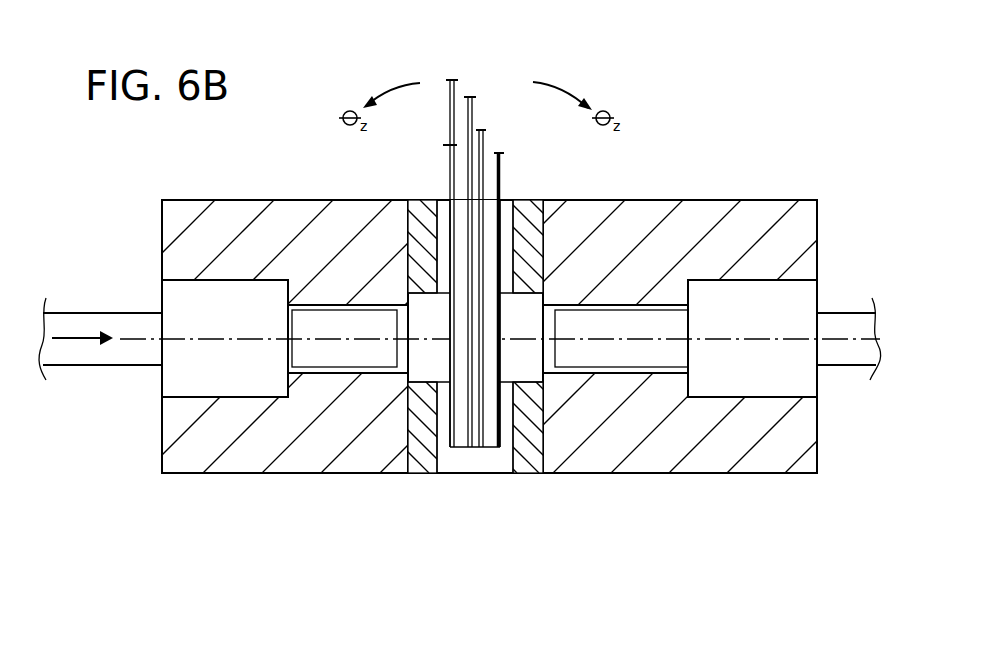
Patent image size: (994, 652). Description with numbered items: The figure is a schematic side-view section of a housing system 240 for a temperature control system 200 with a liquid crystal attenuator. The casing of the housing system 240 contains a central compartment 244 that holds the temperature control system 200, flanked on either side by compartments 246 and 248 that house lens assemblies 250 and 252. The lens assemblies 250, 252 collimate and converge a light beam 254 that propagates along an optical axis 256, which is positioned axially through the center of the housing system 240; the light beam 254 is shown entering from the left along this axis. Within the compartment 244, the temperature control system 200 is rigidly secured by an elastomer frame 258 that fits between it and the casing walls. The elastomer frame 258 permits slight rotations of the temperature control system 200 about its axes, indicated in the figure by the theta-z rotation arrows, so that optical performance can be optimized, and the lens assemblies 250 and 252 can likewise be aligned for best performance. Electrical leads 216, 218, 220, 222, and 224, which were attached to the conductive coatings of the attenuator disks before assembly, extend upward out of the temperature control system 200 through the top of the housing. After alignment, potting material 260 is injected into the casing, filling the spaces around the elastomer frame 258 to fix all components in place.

The temperature control system 200 is at (487, 448).
The electrical lead 216 is at (447, 167).
The electrical lead 218 is at (448, 80).
The electrical lead 220 is at (468, 98).
The electrical lead 222 is at (484, 130).
The electrical lead 224 is at (505, 200).
The housing system 240 is at (806, 150).
The compartment 244 is at (543, 198).
The compartment 246 is at (231, 280).
The compartment 248 is at (760, 280).
The lens assembly 250 is at (255, 378).
The lens assembly 252 is at (763, 378).
The light beam 254 is at (70, 338).
The optical axis 256 is at (147, 342).
The elastomer frame 258 is at (420, 200).
The potting material 260 is at (445, 200).